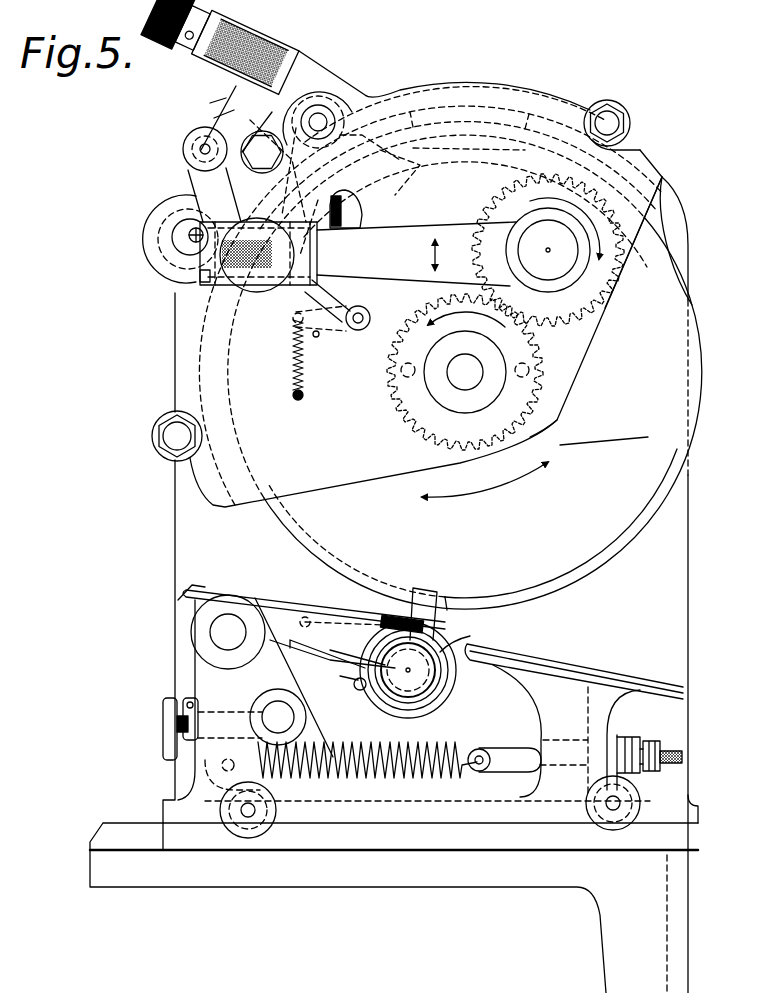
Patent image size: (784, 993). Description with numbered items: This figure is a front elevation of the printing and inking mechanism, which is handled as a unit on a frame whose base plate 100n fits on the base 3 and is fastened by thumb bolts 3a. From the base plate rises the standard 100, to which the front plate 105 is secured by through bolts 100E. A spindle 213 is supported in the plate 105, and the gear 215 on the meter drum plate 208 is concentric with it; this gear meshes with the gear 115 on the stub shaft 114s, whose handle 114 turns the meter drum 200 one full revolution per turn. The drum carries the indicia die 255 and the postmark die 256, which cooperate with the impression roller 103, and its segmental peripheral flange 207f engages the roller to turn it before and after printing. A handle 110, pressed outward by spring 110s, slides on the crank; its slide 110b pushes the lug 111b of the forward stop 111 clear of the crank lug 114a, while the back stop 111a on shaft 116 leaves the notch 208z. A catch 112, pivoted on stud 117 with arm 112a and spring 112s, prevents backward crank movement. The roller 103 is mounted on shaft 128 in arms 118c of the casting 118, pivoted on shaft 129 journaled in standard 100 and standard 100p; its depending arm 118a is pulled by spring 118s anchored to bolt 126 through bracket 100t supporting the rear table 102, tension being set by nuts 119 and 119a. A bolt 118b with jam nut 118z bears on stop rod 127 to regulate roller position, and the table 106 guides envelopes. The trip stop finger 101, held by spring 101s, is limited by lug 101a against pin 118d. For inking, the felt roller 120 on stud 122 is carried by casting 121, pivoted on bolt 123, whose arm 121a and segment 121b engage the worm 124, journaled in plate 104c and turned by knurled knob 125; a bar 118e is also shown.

The base 3 is at (398, 878).
The thumb bolts 3a is at (270, 814).
The standard 100 is at (674, 216).
The through bolts 100E is at (612, 122).
The base plate 100n is at (690, 806).
The standard 100p is at (164, 727).
The bracket 100t is at (563, 698).
The trip stop finger 101 is at (393, 607).
The lug 101a is at (348, 650).
The spring 101s is at (330, 618).
The rear table 102 is at (636, 683).
The impression roller 103 is at (704, 399).
The plate 104c is at (232, 19).
The front plate 105 is at (572, 366).
The table 106 is at (190, 590).
The handle 110 is at (205, 283).
The slide 110b is at (293, 306).
The spring 110s is at (199, 272).
The forward stop 111 is at (302, 153).
The back stop 111a is at (357, 132).
The lug 111b is at (346, 208).
The catch 112 is at (344, 273).
The arm 112a is at (344, 336).
The spring 112s is at (304, 372).
The handle 114 is at (406, 241).
The lug 114a is at (320, 250).
The stub shaft 114s is at (548, 266).
The gear 115 is at (596, 314).
The shaft 116 is at (321, 120).
The stud 117 is at (364, 316).
The casting 118 is at (214, 610).
The depending arm 118a is at (196, 750).
The bolt 118b is at (168, 702).
The arms 118c is at (386, 690).
The pin 118d is at (356, 681).
The lever bar 118e is at (272, 598).
The spring 118s is at (456, 749).
The jam nut 118z is at (186, 702).
The adjusting nut 119 is at (628, 740).
The jam nut 119a is at (662, 741).
The felt roller 120 is at (153, 228).
The casting 121 is at (192, 174).
The rearwardly extending arm 121a is at (212, 103).
The segment 121b is at (216, 118).
The headless stud 122 is at (191, 240).
The bolt 123 is at (203, 149).
The worm 124 is at (266, 56).
The knurled knob 125 is at (168, 26).
The bolt 126 is at (487, 759).
The stop rod 127 is at (270, 707).
The shaft 128 is at (412, 672).
The shaft 129 is at (222, 630).
The meter drum 200 is at (658, 479).
The segmental peripheral flange 207f is at (579, 584).
The meter drum plate 208 is at (293, 529).
The notch 208z is at (411, 165).
The spindle 213 is at (465, 363).
The gear 215 is at (531, 406).
The indicia die 255 is at (401, 130).
The postmark die 256 is at (484, 122).